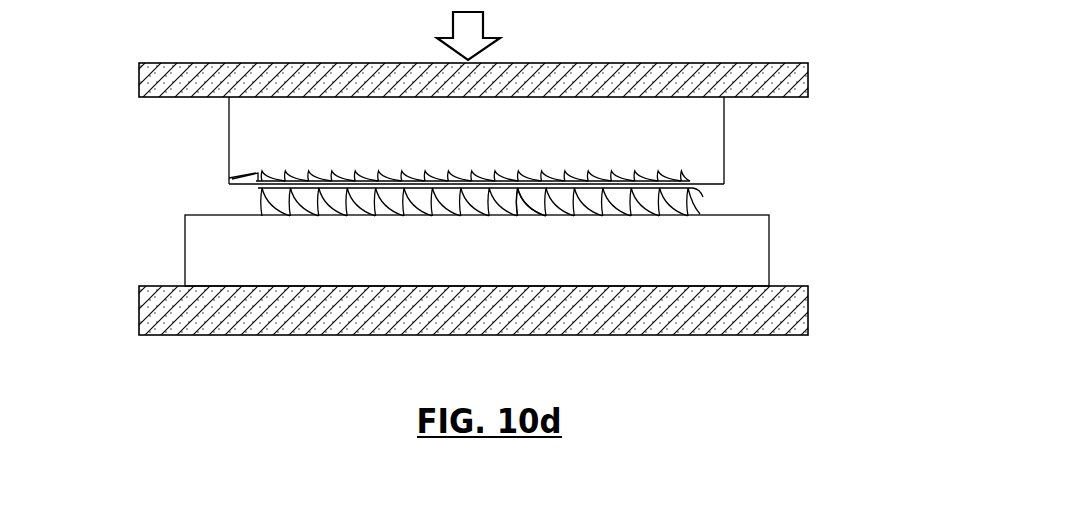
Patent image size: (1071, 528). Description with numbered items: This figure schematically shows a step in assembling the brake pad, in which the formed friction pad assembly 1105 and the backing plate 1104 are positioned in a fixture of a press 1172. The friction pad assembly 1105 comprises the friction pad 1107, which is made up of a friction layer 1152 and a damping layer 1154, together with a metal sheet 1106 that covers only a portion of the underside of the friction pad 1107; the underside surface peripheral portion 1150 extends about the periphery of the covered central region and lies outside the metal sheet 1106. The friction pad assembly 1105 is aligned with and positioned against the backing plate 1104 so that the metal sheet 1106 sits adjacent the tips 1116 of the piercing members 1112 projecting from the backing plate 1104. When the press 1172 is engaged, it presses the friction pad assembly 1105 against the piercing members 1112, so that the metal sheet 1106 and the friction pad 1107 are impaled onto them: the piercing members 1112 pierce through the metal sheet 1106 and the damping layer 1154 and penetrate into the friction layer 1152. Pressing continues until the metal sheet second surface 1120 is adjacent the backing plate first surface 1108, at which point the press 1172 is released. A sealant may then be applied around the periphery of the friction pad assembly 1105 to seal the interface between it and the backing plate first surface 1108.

The press 1172 is at (128, 39).
The friction pad assembly 1105 is at (163, 132).
The friction pad 1107 is at (811, 105).
The friction layer 1152 is at (705, 123).
The damping layer 1154 is at (705, 183).
The underside surface peripheral portion 1150 is at (243, 189).
The metal sheet 1106 is at (690, 197).
The metal sheet second surface 1120 is at (258, 202).
The backing plate first surface 1108 is at (197, 214).
The backing plate 1104 is at (798, 255).
The piercing members 1112 is at (517, 208).
The tips 1116 is at (522, 189).